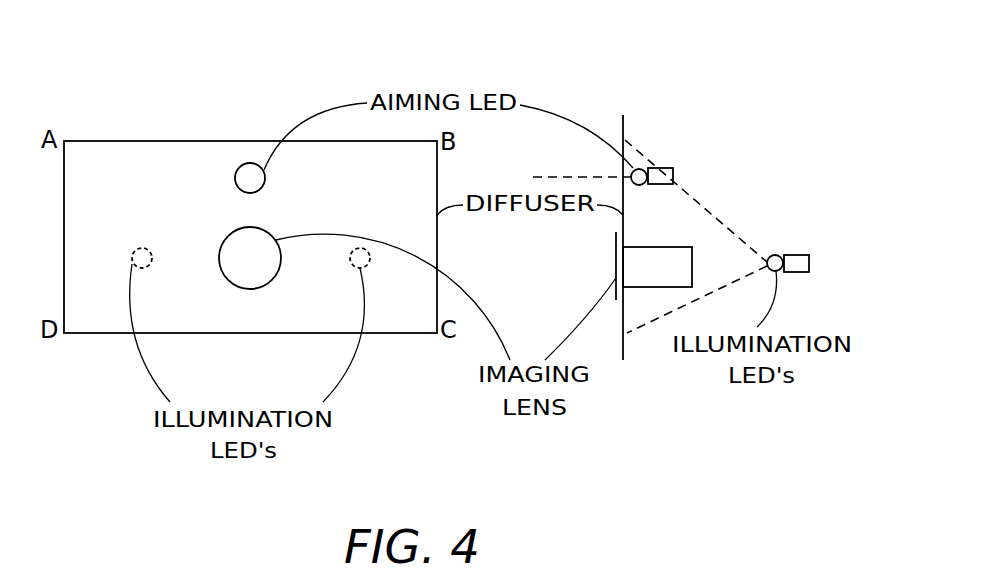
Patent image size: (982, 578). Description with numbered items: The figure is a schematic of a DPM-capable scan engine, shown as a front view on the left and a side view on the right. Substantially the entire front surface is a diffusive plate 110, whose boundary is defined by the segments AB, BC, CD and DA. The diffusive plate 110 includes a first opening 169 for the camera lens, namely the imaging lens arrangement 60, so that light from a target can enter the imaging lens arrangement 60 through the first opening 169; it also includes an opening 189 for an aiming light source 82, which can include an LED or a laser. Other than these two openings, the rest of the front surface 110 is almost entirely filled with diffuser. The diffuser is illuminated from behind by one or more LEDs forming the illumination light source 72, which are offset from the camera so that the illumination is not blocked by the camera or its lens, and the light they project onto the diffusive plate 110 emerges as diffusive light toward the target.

The diffusive plate 110 is at (189, 141).
The opening for aiming light source 189 is at (250, 178).
The first opening 169 is at (247, 265).
The imaging lens arrangement 60 is at (616, 257).
The aiming light source 82 is at (665, 168).
The illumination light source 72 is at (798, 255).